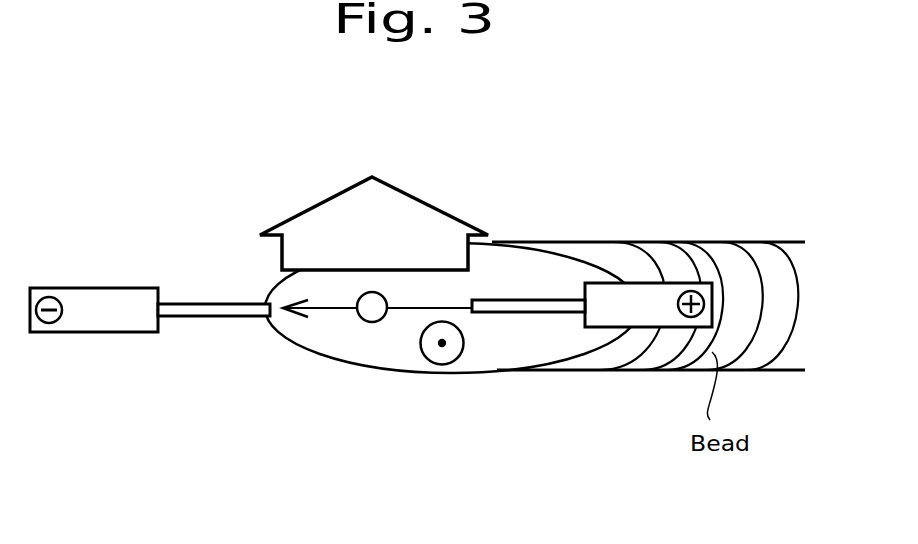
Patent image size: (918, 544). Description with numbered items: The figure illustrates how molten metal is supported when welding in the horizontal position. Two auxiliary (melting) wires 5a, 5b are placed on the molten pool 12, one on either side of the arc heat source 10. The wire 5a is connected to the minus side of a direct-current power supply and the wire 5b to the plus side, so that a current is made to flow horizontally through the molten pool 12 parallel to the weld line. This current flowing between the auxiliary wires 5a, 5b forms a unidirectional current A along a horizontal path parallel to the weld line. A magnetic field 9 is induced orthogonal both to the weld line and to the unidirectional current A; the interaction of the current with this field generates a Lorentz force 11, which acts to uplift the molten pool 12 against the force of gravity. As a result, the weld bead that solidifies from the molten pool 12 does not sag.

The auxiliary wire 5a is at (178, 302).
The auxiliary wire 5b is at (530, 300).
The magnetic field 9 is at (440, 365).
The arc heat source 10 is at (368, 322).
The Lorentz force 11 is at (334, 132).
The molten pool 12 is at (333, 337).
The unidirectional current A is at (323, 310).